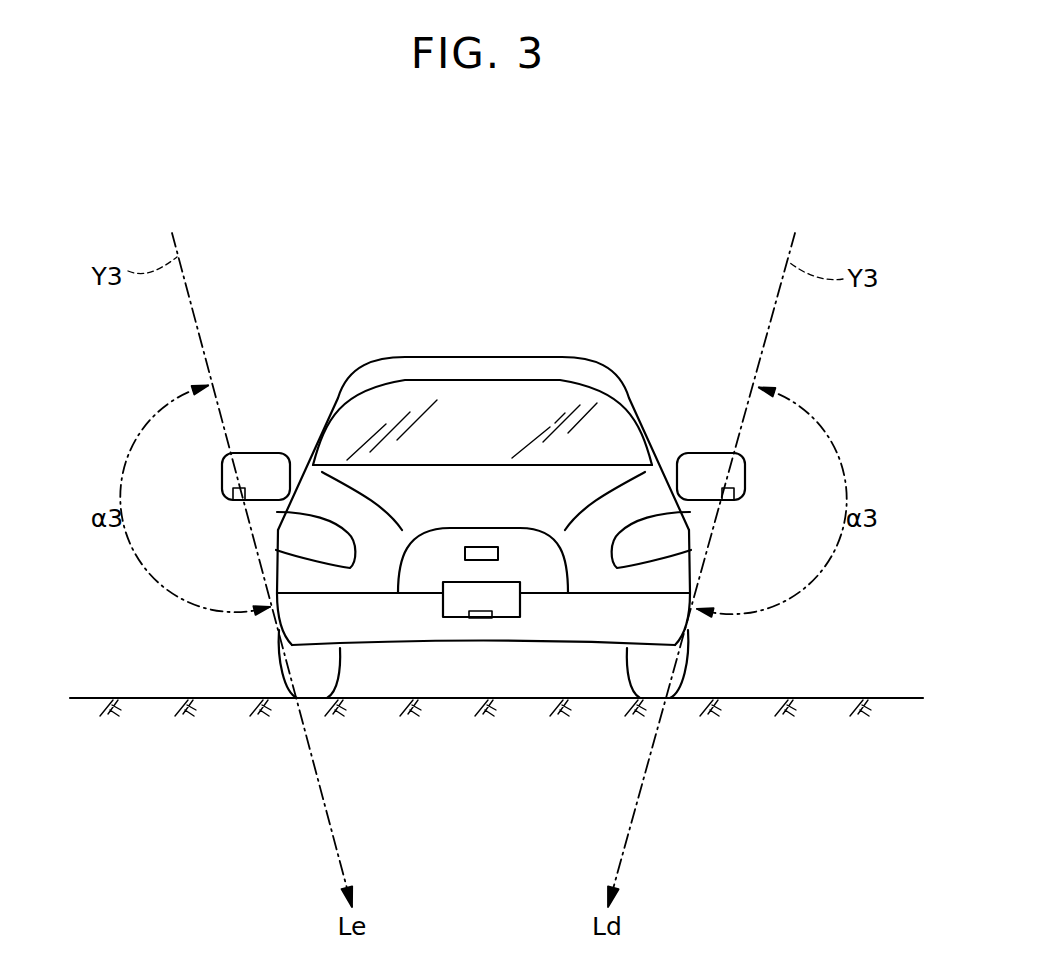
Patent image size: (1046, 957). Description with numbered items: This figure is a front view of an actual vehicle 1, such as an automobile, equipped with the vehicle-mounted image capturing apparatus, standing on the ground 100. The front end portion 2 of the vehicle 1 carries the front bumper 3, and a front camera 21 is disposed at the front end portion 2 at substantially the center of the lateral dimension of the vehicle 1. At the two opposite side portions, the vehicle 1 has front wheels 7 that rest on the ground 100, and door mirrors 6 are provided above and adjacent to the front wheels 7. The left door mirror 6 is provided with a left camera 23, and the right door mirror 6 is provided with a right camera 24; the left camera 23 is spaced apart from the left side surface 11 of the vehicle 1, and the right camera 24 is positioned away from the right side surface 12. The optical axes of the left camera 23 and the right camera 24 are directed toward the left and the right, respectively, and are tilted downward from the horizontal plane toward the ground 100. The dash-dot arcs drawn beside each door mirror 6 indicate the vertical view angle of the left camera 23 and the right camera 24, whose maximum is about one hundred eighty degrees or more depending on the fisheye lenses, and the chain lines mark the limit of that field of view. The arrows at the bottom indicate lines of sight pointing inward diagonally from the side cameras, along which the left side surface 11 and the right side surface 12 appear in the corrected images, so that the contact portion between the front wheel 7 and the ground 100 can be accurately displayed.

The vehicle 1 is at (578, 326).
The front end portion 2 is at (448, 553).
The front bumper 3 is at (537, 634).
The door mirror 6 is at (256, 470).
The front wheel 7 is at (279, 650).
The left side surface 11 is at (688, 528).
The right side surface 12 is at (279, 528).
The front camera 21 is at (482, 613).
The left camera 23 is at (734, 492).
The right camera 24 is at (233, 492).
The ground 100 is at (845, 697).